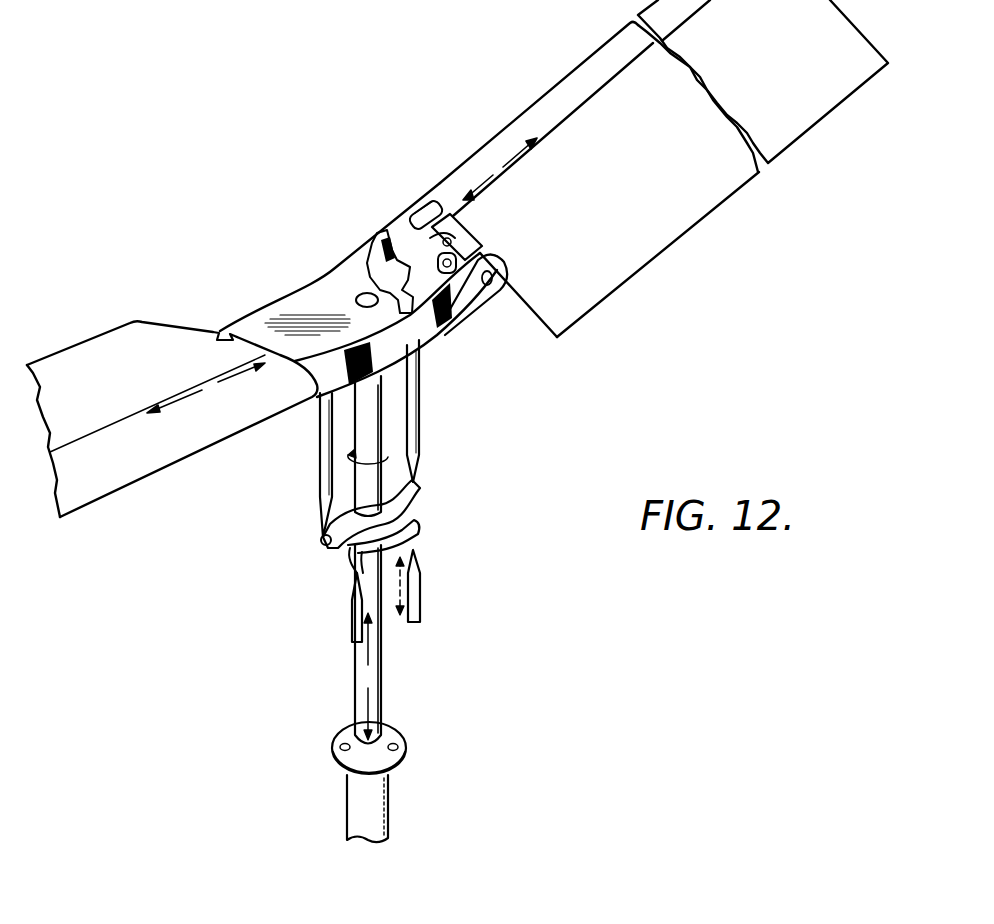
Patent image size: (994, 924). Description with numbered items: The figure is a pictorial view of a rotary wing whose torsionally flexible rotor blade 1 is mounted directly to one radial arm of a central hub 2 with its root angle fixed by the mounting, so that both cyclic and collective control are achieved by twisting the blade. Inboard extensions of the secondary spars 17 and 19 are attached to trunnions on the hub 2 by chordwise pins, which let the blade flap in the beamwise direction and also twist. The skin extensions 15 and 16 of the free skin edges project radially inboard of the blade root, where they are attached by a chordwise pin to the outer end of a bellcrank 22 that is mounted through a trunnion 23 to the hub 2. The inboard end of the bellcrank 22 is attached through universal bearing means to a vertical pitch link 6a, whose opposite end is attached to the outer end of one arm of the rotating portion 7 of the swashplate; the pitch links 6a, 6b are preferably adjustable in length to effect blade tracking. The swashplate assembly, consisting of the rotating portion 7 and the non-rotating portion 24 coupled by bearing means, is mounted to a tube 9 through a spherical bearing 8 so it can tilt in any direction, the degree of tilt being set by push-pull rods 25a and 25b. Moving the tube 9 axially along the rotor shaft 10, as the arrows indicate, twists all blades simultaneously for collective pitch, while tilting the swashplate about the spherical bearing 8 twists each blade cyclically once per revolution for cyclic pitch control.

The rotor blade 1 is at (503, 127).
The hub 2 is at (265, 305).
The vertical pitch link 6a is at (420, 432).
The pitch link 6b is at (320, 441).
The rotating portion of the swashplate 7 is at (323, 540).
The spherical bearing 8 is at (392, 506).
The tube 9 is at (365, 667).
The rotor shaft 10 is at (375, 430).
The downward extension of the forward skin free edge 15 is at (442, 212).
The upward extension of the aft skin free edge 16 is at (458, 240).
The secondary spar 17 is at (410, 212).
The secondary spar 19 is at (215, 333).
The bellcrank 22 is at (402, 278).
The trunnion 23 is at (446, 258).
The non-rotating portion of the swashplate 24 is at (418, 520).
The push-pull rod 25a is at (422, 582).
The push-pull rod 25b is at (350, 626).